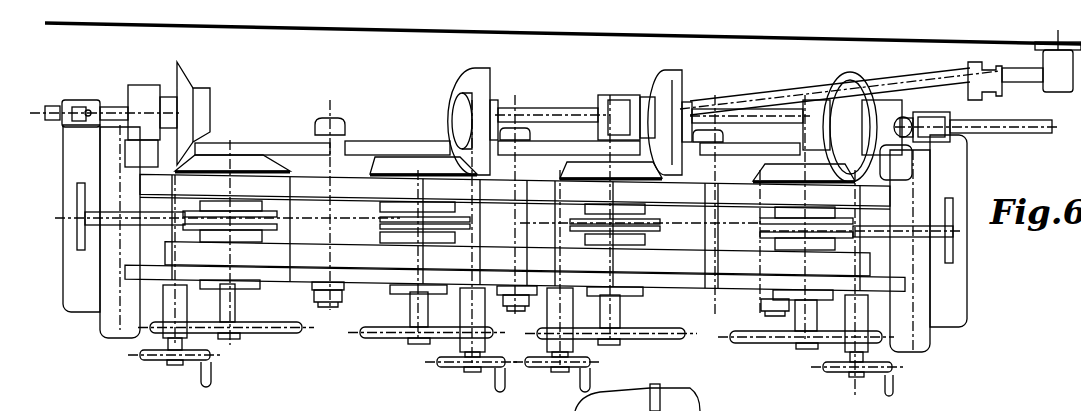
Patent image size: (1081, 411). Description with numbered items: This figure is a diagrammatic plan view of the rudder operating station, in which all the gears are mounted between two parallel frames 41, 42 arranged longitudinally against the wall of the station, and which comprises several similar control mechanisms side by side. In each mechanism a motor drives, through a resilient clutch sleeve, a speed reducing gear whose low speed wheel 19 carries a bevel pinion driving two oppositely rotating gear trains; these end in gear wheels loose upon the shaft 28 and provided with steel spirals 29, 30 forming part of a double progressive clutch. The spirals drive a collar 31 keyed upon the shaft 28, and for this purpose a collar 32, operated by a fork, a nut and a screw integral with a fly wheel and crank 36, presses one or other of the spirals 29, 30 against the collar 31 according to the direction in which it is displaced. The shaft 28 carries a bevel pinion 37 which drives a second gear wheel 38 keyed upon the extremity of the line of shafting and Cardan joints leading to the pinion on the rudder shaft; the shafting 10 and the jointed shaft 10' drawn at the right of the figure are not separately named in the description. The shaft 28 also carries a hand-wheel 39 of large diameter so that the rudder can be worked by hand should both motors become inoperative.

The second gear wheel 38 is at (186, 84).
The bevel pinion 37 is at (238, 157).
The parallel frame 42 is at (365, 147).
The drive shaft 10 is at (977, 139).
The universal-joint drive shaft 10' is at (880, 74).
The low speed wheel 19 is at (104, 240).
The steel spiral 30 is at (456, 205).
The collar 32 is at (456, 220).
The steel spiral 29 is at (456, 238).
The collar 31 is at (635, 213).
The parallel frame 41 is at (378, 286).
The shaft 28 is at (414, 316).
The hand-wheel 39 is at (290, 335).
The fly wheel and crank 36 is at (166, 360).